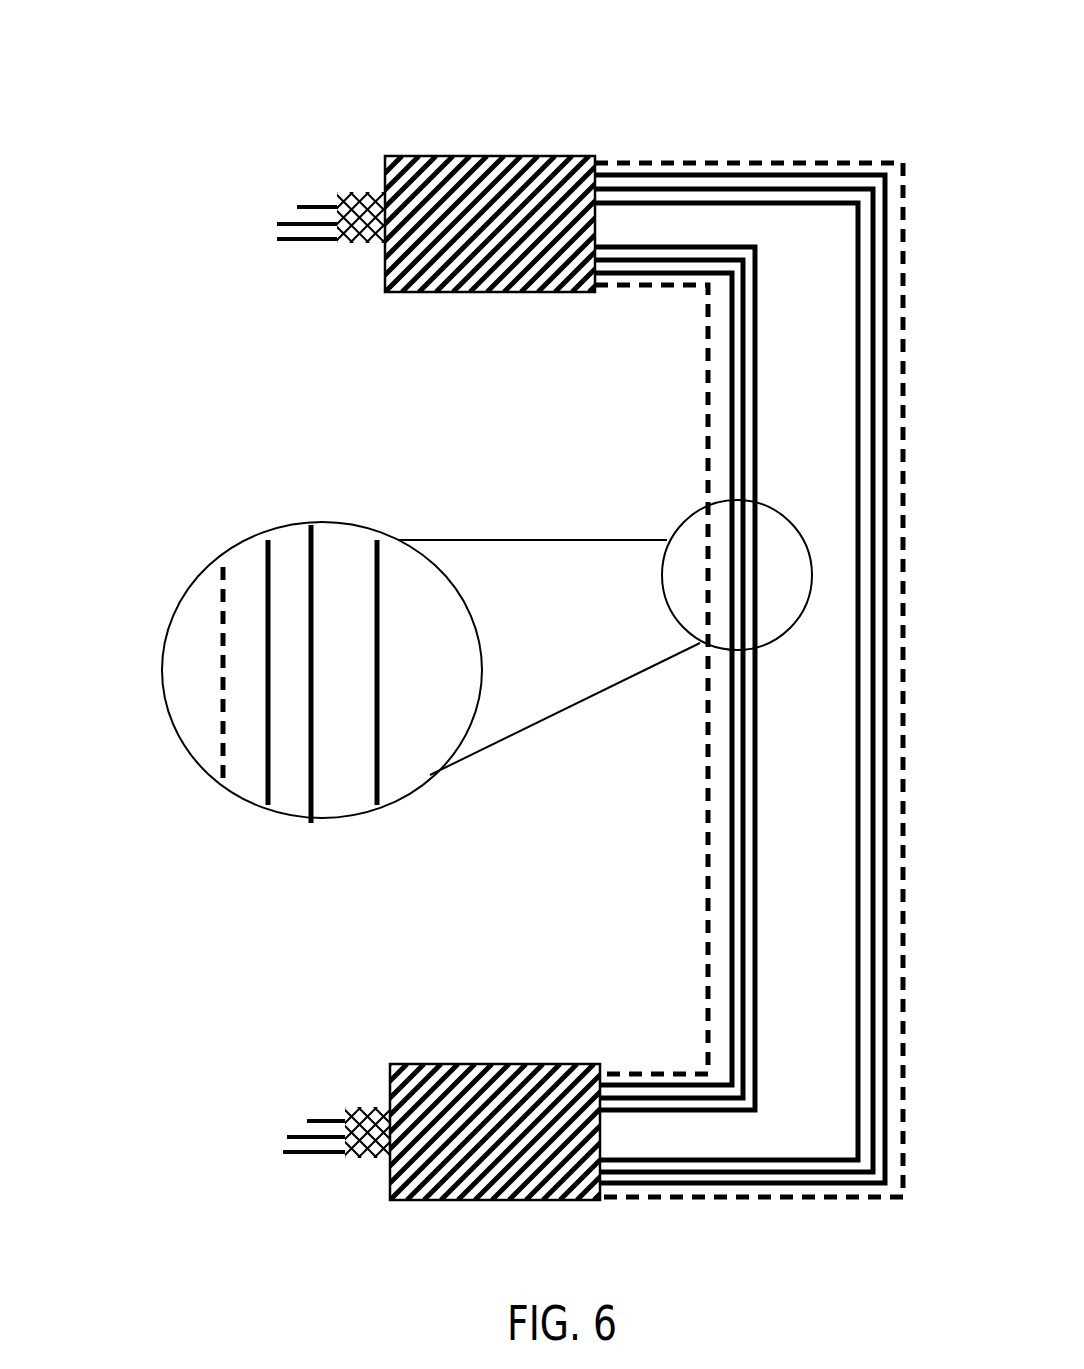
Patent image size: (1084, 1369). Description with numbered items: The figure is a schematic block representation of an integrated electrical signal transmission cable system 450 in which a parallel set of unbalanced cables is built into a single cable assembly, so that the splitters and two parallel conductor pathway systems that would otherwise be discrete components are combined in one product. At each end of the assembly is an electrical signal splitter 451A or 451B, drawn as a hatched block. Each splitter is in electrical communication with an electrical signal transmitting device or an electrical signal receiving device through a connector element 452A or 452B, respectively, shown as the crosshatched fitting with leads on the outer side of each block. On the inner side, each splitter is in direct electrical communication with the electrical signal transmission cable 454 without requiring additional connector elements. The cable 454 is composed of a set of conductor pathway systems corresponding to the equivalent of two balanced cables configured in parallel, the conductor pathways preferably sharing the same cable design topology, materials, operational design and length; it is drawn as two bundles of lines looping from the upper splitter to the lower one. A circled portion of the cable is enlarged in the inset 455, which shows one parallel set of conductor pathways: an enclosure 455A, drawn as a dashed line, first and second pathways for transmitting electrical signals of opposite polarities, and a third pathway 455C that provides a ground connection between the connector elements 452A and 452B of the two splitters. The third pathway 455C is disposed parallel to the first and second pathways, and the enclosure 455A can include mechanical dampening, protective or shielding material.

The integrated electrical signal transmission cable system 450 is at (147, 25).
The electrical signal splitter 451A is at (495, 135).
The connector element 452A is at (360, 252).
The electrical signal splitter 451B is at (492, 1045).
The connector element 452B is at (368, 1105).
The electrical signal transmission cable 454 is at (698, 775).
The inset 455 is at (451, 715).
The enclosure 455A is at (220, 722).
The third pathway 455C is at (377, 775).